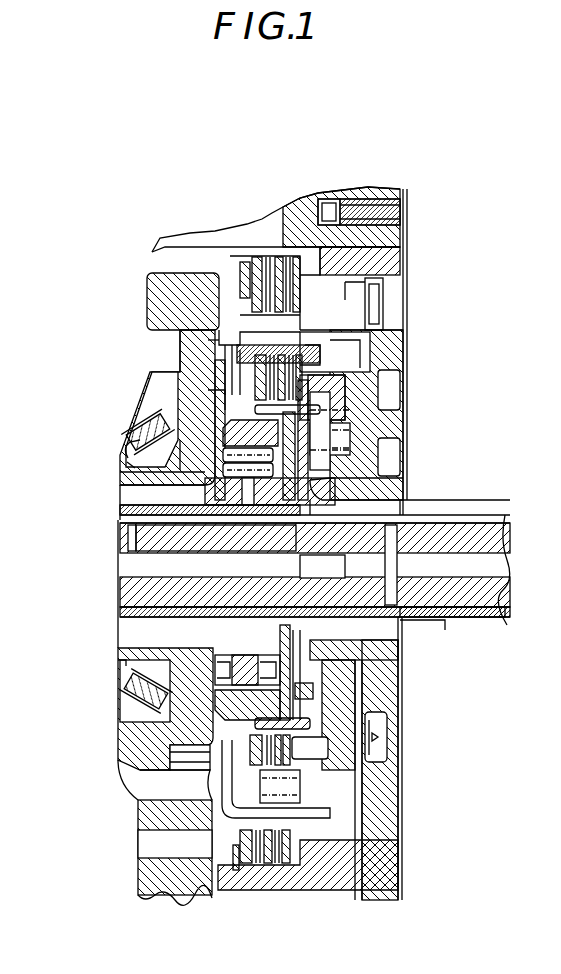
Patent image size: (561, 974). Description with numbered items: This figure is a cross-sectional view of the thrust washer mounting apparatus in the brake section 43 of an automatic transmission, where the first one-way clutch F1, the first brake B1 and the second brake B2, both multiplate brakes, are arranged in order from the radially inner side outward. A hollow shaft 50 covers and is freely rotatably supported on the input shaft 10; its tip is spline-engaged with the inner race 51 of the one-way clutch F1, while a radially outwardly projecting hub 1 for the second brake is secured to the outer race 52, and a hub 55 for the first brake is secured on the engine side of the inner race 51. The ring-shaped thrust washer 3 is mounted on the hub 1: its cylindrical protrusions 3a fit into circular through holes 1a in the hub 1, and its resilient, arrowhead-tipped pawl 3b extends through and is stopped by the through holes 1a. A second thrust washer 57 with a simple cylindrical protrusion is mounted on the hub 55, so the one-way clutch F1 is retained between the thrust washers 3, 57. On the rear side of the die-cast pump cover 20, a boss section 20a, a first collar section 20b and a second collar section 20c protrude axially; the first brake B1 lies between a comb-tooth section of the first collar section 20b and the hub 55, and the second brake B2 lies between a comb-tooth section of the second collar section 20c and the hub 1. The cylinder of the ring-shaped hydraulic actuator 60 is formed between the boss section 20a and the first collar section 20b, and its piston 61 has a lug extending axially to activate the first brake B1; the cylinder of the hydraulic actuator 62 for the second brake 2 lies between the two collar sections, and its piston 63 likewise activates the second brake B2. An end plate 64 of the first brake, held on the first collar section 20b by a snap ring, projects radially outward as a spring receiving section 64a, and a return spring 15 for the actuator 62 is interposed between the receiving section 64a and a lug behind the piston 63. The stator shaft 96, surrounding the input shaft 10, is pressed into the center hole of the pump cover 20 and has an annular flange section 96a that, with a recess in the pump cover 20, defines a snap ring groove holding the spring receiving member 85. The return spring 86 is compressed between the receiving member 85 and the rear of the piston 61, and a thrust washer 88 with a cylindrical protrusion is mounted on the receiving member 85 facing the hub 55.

The hub for the second brake 1 is at (228, 300).
The circular through holes 1a is at (150, 418).
The second brake 2 is at (225, 372).
The thrust washer 3 is at (232, 395).
The cylindrical protrusions 3a is at (182, 347).
The pawl 3b is at (175, 330).
The input shaft 10 is at (160, 590).
The return spring 15 is at (290, 880).
The pump cover 20 is at (405, 425).
The boss section 20a is at (375, 482).
The first collar section 20b is at (313, 330).
The second collar section 20c is at (293, 232).
The brake section 43 is at (168, 205).
The hollow shaft 50 is at (150, 524).
The inner race 51 is at (216, 553).
The outer race 52 is at (132, 442).
The hub for the first brake 55 is at (270, 500).
The thrust washer 57 is at (284, 496).
The hydraulic actuator for the first brake 60 is at (355, 422).
The piston 61 is at (328, 388).
The hydraulic actuator for the second brake 62 is at (372, 278).
The piston 63 is at (368, 243).
The end plate 64 is at (195, 752).
The spring receiving section 64a is at (140, 800).
The spring receiving member 85 is at (322, 567).
The return spring 86 is at (330, 425).
The thrust washer 88 is at (315, 695).
The stator shaft 96 is at (443, 621).
The flange section 96a is at (345, 647).
The first brake B1 is at (303, 363).
The second brake B2 is at (263, 270).
The first one-way clutch F1 is at (165, 470).